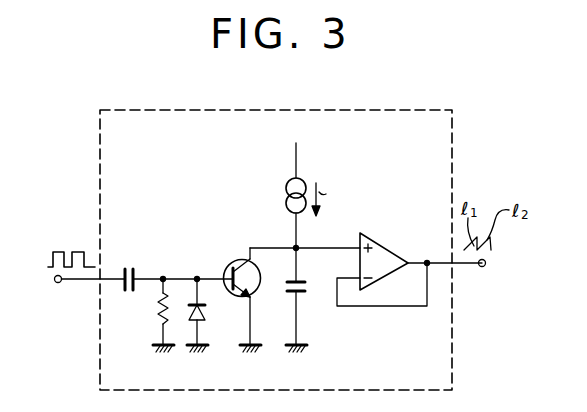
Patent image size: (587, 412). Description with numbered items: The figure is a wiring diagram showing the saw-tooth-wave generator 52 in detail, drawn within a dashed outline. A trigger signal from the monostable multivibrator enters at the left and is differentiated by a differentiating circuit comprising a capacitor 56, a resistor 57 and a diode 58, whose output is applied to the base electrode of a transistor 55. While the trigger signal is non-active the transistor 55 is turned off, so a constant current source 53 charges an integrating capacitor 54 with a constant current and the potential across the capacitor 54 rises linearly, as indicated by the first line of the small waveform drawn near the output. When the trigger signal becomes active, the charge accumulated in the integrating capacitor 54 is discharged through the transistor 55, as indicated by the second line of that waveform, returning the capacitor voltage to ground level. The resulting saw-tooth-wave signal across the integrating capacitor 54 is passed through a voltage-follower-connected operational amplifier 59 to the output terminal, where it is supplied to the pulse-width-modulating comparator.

The saw-tooth-wave generator 52 is at (118, 137).
The constant current source 53 is at (287, 184).
The integrating capacitor 54 is at (306, 290).
The transistor 55 is at (240, 262).
The capacitor 56 is at (132, 268).
The resistor 57 is at (160, 305).
The diode 58 is at (206, 310).
The operational amplifier 59 is at (390, 257).